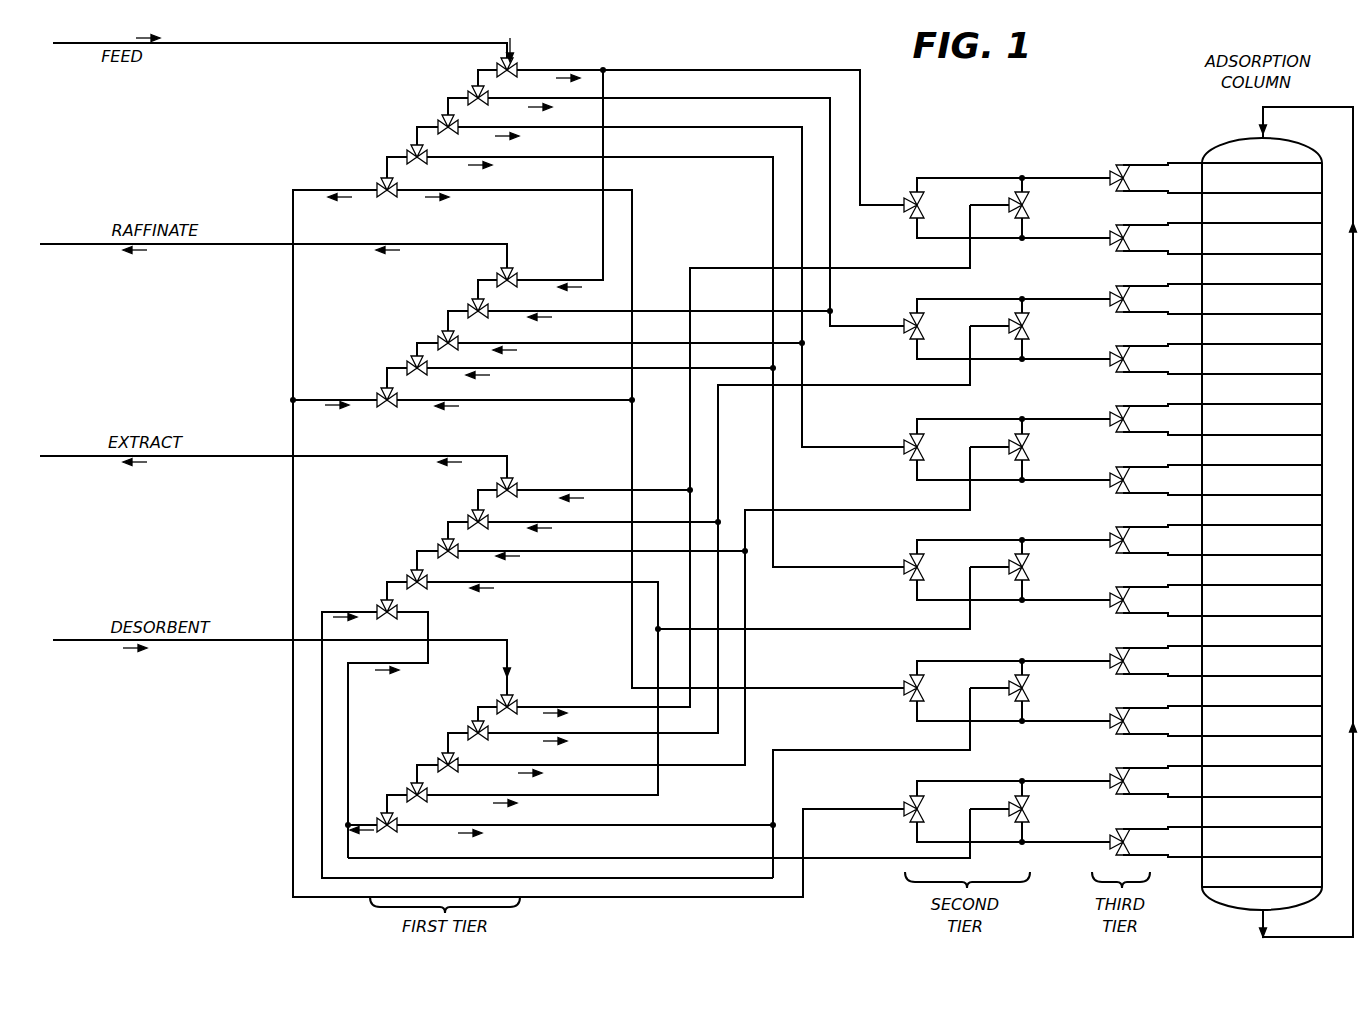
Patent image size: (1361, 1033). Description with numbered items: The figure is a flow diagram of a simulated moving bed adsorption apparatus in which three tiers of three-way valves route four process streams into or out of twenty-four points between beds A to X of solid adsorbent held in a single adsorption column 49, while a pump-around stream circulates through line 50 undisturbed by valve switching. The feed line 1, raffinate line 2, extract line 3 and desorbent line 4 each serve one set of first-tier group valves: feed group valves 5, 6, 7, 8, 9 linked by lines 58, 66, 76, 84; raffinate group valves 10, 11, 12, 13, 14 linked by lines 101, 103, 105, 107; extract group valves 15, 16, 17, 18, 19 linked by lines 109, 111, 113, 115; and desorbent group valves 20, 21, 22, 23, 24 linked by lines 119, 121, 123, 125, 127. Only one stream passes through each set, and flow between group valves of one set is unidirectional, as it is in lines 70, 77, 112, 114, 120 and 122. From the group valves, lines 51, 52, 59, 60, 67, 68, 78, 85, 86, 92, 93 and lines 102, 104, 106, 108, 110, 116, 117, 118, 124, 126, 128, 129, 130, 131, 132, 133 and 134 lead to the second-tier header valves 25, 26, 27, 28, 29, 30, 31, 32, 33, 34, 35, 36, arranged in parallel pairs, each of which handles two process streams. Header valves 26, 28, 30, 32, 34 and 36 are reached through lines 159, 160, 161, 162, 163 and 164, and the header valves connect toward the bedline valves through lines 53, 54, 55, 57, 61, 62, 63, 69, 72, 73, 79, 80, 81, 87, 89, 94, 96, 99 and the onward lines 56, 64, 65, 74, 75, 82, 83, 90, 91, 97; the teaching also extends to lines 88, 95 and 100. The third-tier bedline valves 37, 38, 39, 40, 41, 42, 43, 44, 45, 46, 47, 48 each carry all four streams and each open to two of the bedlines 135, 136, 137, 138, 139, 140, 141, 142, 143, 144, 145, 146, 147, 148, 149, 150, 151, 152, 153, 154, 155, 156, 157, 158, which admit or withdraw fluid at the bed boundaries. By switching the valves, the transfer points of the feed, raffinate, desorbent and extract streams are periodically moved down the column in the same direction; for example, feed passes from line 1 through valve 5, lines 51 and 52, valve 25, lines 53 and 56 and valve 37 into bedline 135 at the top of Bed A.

The feed line 1 is at (211, 52).
The raffinate line 2 is at (232, 250).
The extract line 3 is at (225, 463).
The desorbent line 4 is at (239, 648).
The group valve 5 is at (514, 65).
The group valve 6 is at (485, 100).
The group valve 7 is at (457, 128).
The group valve 8 is at (426, 157).
The group valve 9 is at (396, 187).
The group valve 10 is at (516, 276).
The group valve 11 is at (488, 306).
The group valve 12 is at (460, 339).
The group valve 13 is at (430, 369).
The group valve 14 is at (403, 399).
The group valve 15 is at (516, 484).
The group valve 16 is at (485, 522).
The group valve 17 is at (458, 552).
The group valve 18 is at (432, 580).
The group valve 19 is at (398, 611).
The group valve 20 is at (516, 701).
The group valve 21 is at (490, 736).
The group valve 22 is at (472, 766).
The group valve 23 is at (432, 796).
The group valve 24 is at (407, 828).
The header valve 25 is at (910, 196).
The header valve 26 is at (1011, 208).
The header valve 27 is at (903, 334).
The header valve 28 is at (1010, 322).
The header valve 29 is at (907, 451).
The header valve 30 is at (1010, 443).
The header valve 31 is at (900, 575).
The header valve 32 is at (1006, 565).
The header valve 33 is at (903, 695).
The header valve 34 is at (1010, 685).
The header valve 35 is at (898, 814).
The header valve 36 is at (1012, 808).
The bedline valve 37 is at (1116, 169).
The bedline valve 38 is at (1112, 240).
The bedline valve 39 is at (1112, 310).
The bedline valve 40 is at (1112, 365).
The bedline valve 41 is at (1116, 423).
The bedline valve 42 is at (1108, 486).
The bedline valve 43 is at (1118, 548).
The bedline valve 44 is at (1115, 599).
The bedline valve 45 is at (1116, 668).
The bedline valve 46 is at (1107, 721).
The bedline valve 47 is at (1109, 785).
The bedline valve 48 is at (1107, 842).
The adsorption column 49 is at (1226, 138).
The pump-around line 50 is at (1254, 112).
The line 51 is at (580, 68).
The line 52 is at (649, 68).
The line 53 is at (956, 177).
The line 54 is at (954, 237).
The line 55 is at (1032, 182).
The line 56 is at (1065, 177).
The line 57 is at (1052, 237).
The line 58 is at (482, 68).
The line 59 is at (570, 100).
The line 60 is at (860, 326).
The line 61 is at (951, 300).
The line 62 is at (954, 358).
The line 63 is at (1028, 346).
The line 64 is at (1065, 300).
The line 65 is at (1049, 362).
The line 66 is at (449, 98).
The line 67 is at (563, 131).
The line 68 is at (840, 445).
The line 69 is at (954, 420).
The line 70 is at (312, 400).
The line 72 is at (951, 482).
The line 73 is at (1026, 422).
The line 74 is at (1080, 418).
The line 75 is at (1044, 482).
The line 76 is at (418, 130).
The line 77 is at (538, 161).
The line 78 is at (773, 465).
The line 79 is at (954, 540).
The line 80 is at (949, 602).
The line 81 is at (1028, 589).
The line 82 is at (1047, 604).
The line 83 is at (1058, 537).
The line 84 is at (388, 158).
The line 85 is at (539, 193).
The line 86 is at (632, 447).
The line 87 is at (956, 660).
The line 88 is at (949, 724).
The line 89 is at (1030, 668).
The line 90 is at (1054, 660).
The line 91 is at (1060, 733).
The line 92 is at (295, 190).
The line 93 is at (293, 553).
The line 94 is at (956, 783).
The line 95 is at (956, 834).
The line 96 is at (1024, 809).
The line 97 is at (1051, 783).
The line 99 is at (1050, 846).
The line 100 is at (603, 234).
The line 101 is at (482, 276).
The line 102 is at (584, 311).
The line 103 is at (452, 308).
The line 104 is at (577, 343).
The line 105 is at (427, 339).
The line 106 is at (573, 370).
The line 107 is at (390, 369).
The line 108 is at (568, 402).
The line 109 is at (477, 492).
The line 110 is at (574, 496).
The line 111 is at (447, 524).
The line 112 is at (577, 526).
The line 113 is at (427, 552).
The line 114 is at (577, 556).
The line 115 is at (397, 582).
The line 116 is at (574, 585).
The line 117 is at (340, 603).
The line 118 is at (430, 629).
The line 119 is at (490, 706).
The line 120 is at (688, 510).
The line 121 is at (447, 736).
The line 122 is at (593, 736).
The line 123 is at (427, 761).
The line 124 is at (593, 767).
The line 125 is at (404, 784).
The line 126 is at (593, 796).
The line 127 is at (365, 822).
The line 128 is at (593, 826).
The line 129 is at (583, 859).
The line 130 is at (712, 264).
The conduit 131 is at (724, 422).
The line 132 is at (806, 510).
The line 133 is at (798, 629).
The line 134 is at (780, 790).
The bedline 135 is at (1176, 162).
The bedline 136 is at (1176, 192).
The bedline 137 is at (1176, 222).
The bedline 138 is at (1176, 253).
The bedline 139 is at (1176, 283).
The bedline 140 is at (1176, 313).
The bedline 141 is at (1176, 343).
The bedline 142 is at (1176, 373).
The bedline 143 is at (1176, 403).
The bedline 144 is at (1176, 434).
The bedline 145 is at (1176, 464).
The bedline 146 is at (1176, 494).
The bedline 147 is at (1176, 524).
The bedline 148 is at (1176, 554).
The bedline 149 is at (1176, 584).
The bedline 150 is at (1176, 615).
The bedline 151 is at (1176, 645).
The bedline 152 is at (1176, 675).
The bedline 153 is at (1176, 705).
The bedline 154 is at (1176, 735).
The bedline 155 is at (1176, 765).
The bedline 156 is at (1176, 796).
The bedline 157 is at (1176, 826).
The bedline 158 is at (1176, 856).
The line 159 is at (1028, 208).
The line 160 is at (1028, 316).
The line 161 is at (1030, 458).
The line 162 is at (1022, 549).
The line 163 is at (1031, 704).
The line 164 is at (1035, 820).